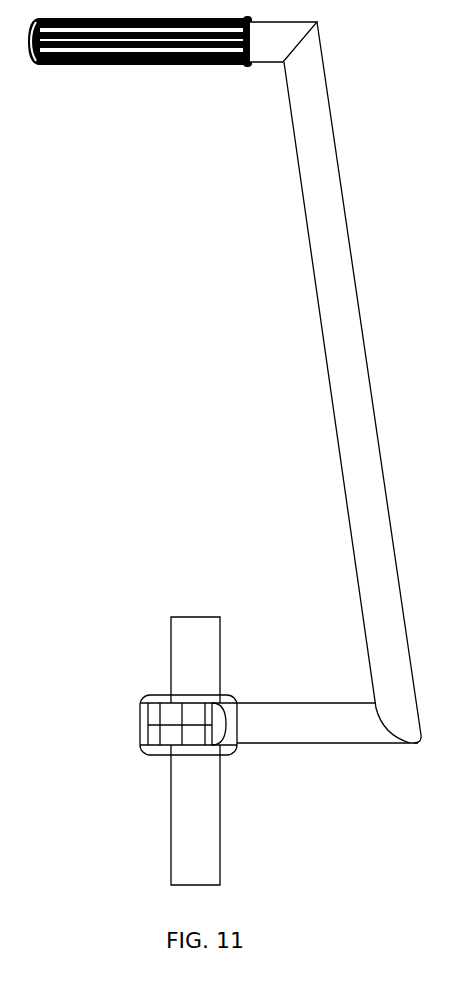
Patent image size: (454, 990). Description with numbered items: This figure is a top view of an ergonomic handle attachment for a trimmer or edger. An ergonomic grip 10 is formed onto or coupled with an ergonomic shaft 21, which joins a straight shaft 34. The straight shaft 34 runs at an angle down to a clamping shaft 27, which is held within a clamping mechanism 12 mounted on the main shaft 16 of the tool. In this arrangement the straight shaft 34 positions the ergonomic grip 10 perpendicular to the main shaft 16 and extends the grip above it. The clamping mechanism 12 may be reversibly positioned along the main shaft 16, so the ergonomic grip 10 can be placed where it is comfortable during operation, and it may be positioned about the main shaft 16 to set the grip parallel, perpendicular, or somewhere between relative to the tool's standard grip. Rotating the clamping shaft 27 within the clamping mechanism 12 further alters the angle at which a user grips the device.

The ergonomic grip 10 is at (145, 72).
The ergonomic shaft 21 is at (267, 70).
The straight shaft 34 is at (308, 322).
The clamping shaft 27 is at (318, 754).
The main shaft 16 is at (158, 858).
The clamping mechanism 12 is at (128, 722).